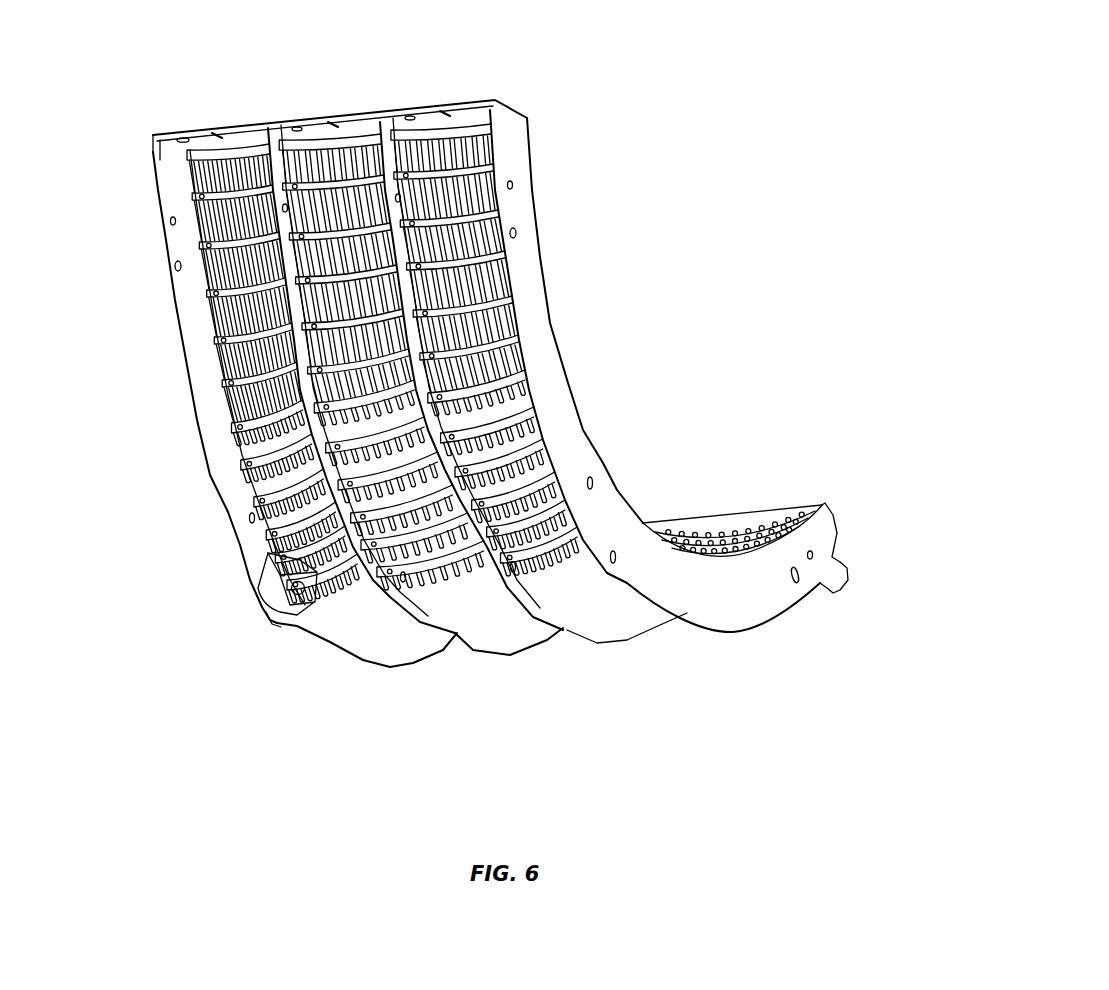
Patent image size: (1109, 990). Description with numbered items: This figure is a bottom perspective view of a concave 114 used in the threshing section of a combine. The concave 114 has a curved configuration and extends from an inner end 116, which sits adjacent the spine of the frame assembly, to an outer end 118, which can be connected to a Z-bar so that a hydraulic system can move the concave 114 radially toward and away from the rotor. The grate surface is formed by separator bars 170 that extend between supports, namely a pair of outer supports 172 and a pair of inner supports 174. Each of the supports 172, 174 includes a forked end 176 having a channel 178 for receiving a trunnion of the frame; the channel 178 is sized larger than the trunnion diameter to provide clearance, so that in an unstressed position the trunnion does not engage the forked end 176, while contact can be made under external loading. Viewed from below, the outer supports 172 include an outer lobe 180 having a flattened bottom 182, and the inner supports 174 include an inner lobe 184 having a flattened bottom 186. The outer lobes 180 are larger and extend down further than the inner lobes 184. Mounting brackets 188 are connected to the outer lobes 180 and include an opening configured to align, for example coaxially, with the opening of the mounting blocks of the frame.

The concave 114 is at (751, 210).
The inner end 116 is at (780, 505).
The outer end 118 is at (207, 130).
The separator bars 170 is at (466, 241).
The outer supports 172 is at (205, 413).
The inner supports 174 is at (610, 633).
The forked end 176 is at (842, 587).
The channel 178 is at (833, 557).
The outer lobe 180 is at (247, 552).
The flattened bottom 182 is at (243, 586).
The inner lobe 184 is at (377, 607).
The flattened bottom 186 is at (427, 623).
The mounting bracket 188 is at (268, 620).